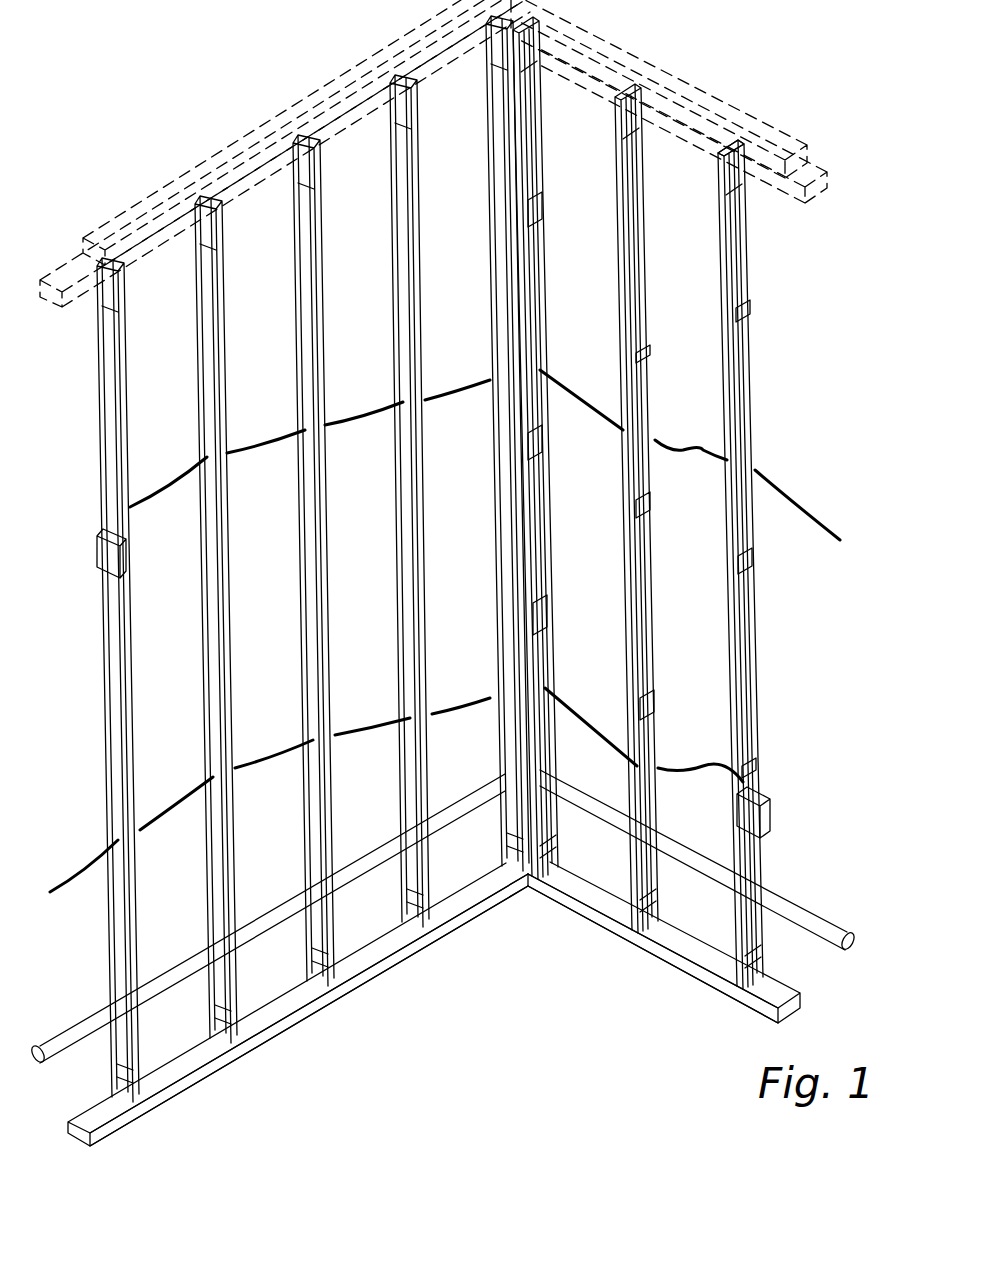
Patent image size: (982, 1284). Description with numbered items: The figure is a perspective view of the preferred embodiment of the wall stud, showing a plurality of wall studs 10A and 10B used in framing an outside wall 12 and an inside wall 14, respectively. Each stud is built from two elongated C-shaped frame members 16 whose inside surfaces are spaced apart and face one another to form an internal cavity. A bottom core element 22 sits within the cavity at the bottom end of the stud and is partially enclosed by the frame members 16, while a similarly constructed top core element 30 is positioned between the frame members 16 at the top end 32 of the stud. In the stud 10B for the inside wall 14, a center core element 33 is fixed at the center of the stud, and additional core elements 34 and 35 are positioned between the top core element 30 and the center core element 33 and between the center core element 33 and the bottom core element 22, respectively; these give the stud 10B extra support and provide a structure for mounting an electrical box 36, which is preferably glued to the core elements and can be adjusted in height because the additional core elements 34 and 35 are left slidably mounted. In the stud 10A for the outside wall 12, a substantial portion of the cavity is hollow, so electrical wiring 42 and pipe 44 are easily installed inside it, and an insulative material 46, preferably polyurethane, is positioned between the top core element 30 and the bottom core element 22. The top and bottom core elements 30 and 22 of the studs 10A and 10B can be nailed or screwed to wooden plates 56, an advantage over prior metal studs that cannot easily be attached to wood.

The wall stud 10A is at (100, 658).
The wall stud 10B is at (752, 249).
The outside wall 12 is at (375, 983).
The inside wall 14 is at (636, 955).
The frame member 16 is at (395, 508).
The bottom core element 22 is at (513, 845).
The top core element 30 is at (200, 232).
The top end 32 is at (718, 152).
The center core element 33 is at (641, 507).
The additional core element 34 is at (532, 200).
The additional core element 35 is at (543, 613).
The electrical box 36 is at (101, 557).
The electrical wiring 42 is at (799, 518).
The pipe 44 is at (778, 898).
The insulative material 46 is at (116, 703).
The wooden plate 56 is at (315, 1004).